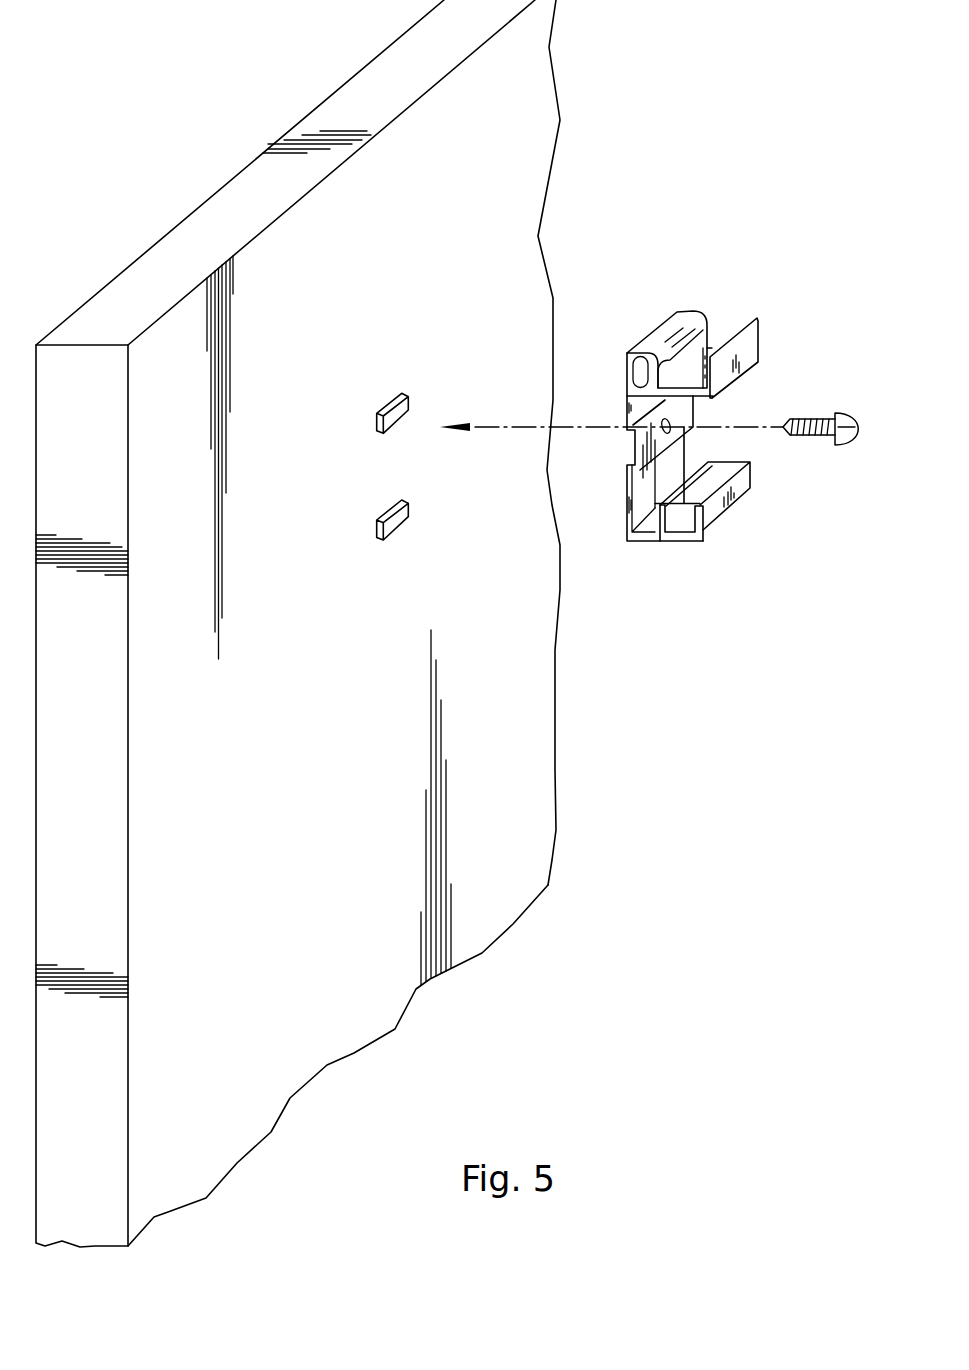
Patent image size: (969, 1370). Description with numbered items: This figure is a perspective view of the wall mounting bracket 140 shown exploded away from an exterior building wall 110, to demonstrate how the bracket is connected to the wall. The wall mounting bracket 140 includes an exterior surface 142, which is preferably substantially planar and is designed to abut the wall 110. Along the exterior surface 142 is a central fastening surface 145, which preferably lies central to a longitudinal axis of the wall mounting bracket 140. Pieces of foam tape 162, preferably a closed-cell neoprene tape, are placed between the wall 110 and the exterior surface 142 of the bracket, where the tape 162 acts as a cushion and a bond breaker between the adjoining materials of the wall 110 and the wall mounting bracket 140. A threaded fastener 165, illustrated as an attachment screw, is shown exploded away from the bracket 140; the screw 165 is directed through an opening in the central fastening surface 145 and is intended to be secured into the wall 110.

The wall 110 is at (512, 728).
The wall mounting bracket 140 is at (670, 387).
The exterior surface 142 is at (627, 378).
The central fastening surface 145 is at (685, 413).
The foam tape 162 is at (405, 405).
The threaded fastener 165 is at (798, 418).